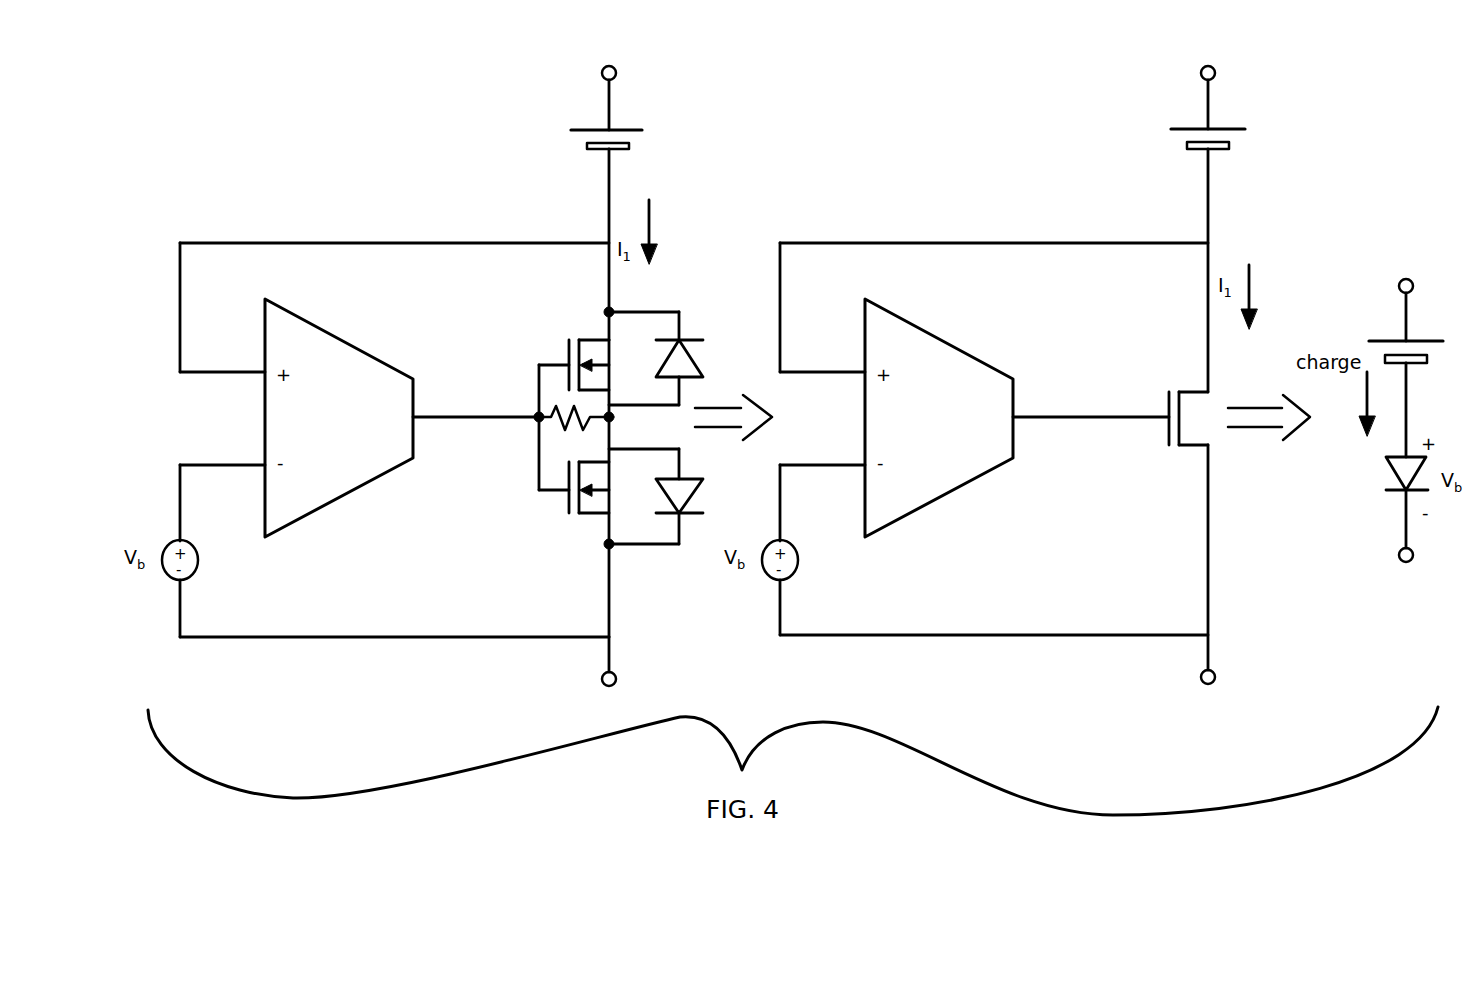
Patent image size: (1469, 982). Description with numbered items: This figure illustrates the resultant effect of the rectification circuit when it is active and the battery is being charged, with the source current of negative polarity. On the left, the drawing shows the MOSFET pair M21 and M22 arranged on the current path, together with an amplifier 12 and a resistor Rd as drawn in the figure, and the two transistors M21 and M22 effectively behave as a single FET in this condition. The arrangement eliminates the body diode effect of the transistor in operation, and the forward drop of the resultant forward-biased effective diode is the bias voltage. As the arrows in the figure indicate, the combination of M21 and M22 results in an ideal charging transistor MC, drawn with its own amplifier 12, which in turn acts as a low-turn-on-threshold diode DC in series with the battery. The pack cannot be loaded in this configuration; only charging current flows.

The operational amplifier 12 is at (639, 418).
The MOSFET M21 is at (568, 338).
The MOSFET M22 is at (557, 516).
The resistor Rd is at (560, 412).
The charging transistor MC is at (1170, 385).
The diode DC is at (1392, 467).